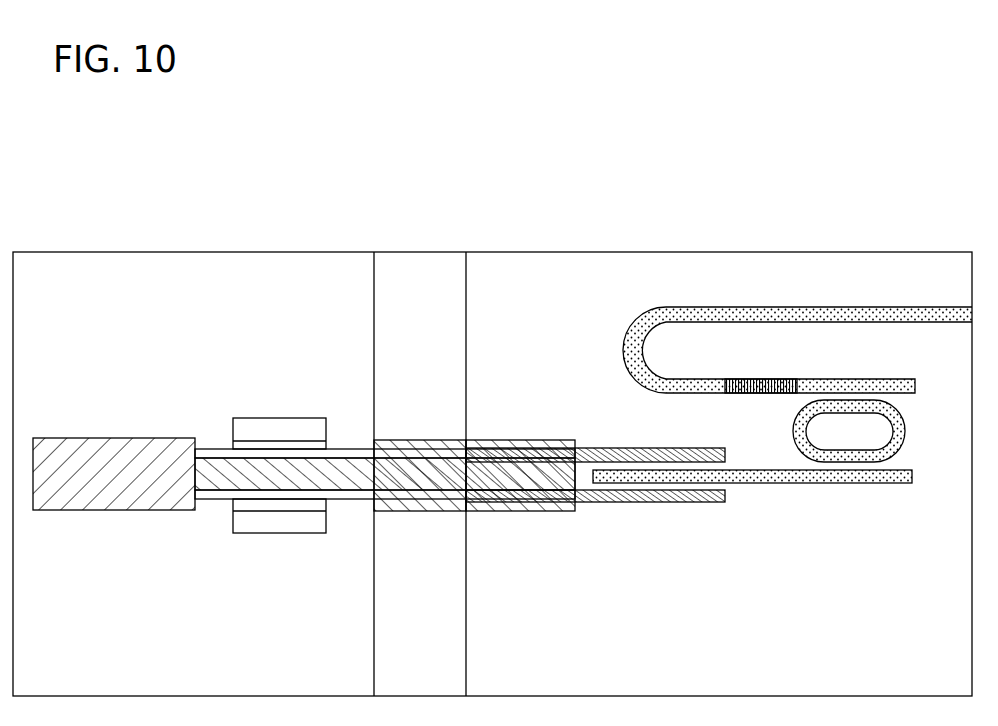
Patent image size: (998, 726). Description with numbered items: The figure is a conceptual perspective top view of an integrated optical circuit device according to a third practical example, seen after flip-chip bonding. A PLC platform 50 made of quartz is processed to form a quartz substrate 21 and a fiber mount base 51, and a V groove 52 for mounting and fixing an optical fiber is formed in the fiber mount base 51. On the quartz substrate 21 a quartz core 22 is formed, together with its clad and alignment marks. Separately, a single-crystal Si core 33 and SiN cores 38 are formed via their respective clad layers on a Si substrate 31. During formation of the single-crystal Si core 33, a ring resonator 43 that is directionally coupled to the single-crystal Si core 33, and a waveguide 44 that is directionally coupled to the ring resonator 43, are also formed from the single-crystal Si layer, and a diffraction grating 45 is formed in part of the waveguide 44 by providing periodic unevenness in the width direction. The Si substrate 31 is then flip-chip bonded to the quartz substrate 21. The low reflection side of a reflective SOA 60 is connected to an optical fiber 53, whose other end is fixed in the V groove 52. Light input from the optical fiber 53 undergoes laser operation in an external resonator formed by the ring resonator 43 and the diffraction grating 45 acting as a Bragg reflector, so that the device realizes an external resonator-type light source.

The PLC platform 50 is at (122, 268).
The quartz substrate 21 is at (420, 268).
The Si substrate 31 is at (563, 270).
The reflective SOA 60 is at (122, 452).
The optical fiber 53 is at (350, 449).
The fiber mount base 51 is at (280, 432).
The V groove 52 is at (280, 508).
The quartz core 22 is at (420, 455).
The SiN cores 38 is at (666, 502).
The single-crystal Si core 33 is at (813, 484).
The waveguide 44 is at (857, 380).
The diffraction grating 45 is at (760, 380).
The ring resonator 43 is at (905, 432).